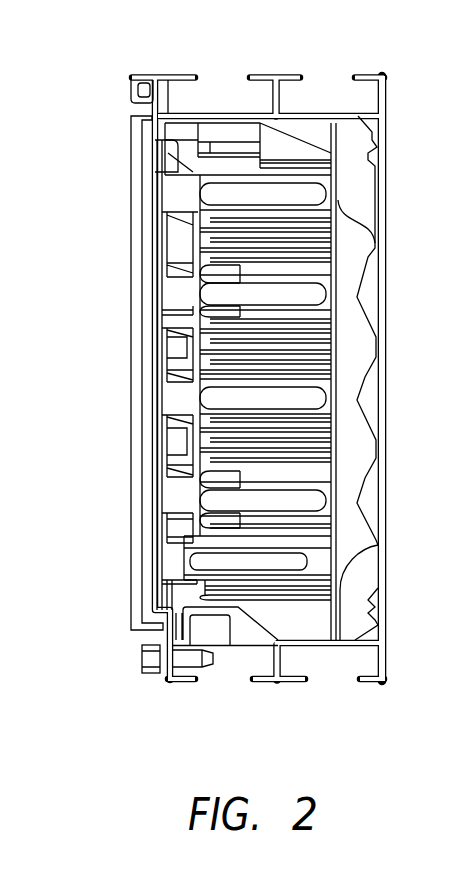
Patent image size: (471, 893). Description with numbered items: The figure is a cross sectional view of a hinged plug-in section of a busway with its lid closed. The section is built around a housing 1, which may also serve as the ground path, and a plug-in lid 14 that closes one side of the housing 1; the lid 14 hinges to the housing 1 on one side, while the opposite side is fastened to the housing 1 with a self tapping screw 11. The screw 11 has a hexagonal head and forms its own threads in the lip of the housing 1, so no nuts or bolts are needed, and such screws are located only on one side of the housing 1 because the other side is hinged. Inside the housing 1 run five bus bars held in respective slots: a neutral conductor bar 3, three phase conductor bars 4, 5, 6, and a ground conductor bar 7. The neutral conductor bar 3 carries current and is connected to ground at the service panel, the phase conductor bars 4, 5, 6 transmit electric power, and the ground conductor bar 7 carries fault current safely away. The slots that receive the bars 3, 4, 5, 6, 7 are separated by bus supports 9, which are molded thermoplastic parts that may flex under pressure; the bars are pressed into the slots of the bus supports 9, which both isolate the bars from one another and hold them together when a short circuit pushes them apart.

The housing 1 is at (392, 78).
The neutral conductor bar 3 is at (326, 193).
The phase conductor bar 4 is at (325, 297).
The phase conductor bar 5 is at (330, 400).
The phase conductor bar 6 is at (330, 503).
The ground conductor bar 7 is at (322, 562).
The bus supports 9 is at (252, 345).
The self tapping screw 11 is at (142, 657).
The plug-in lid 14 is at (130, 190).